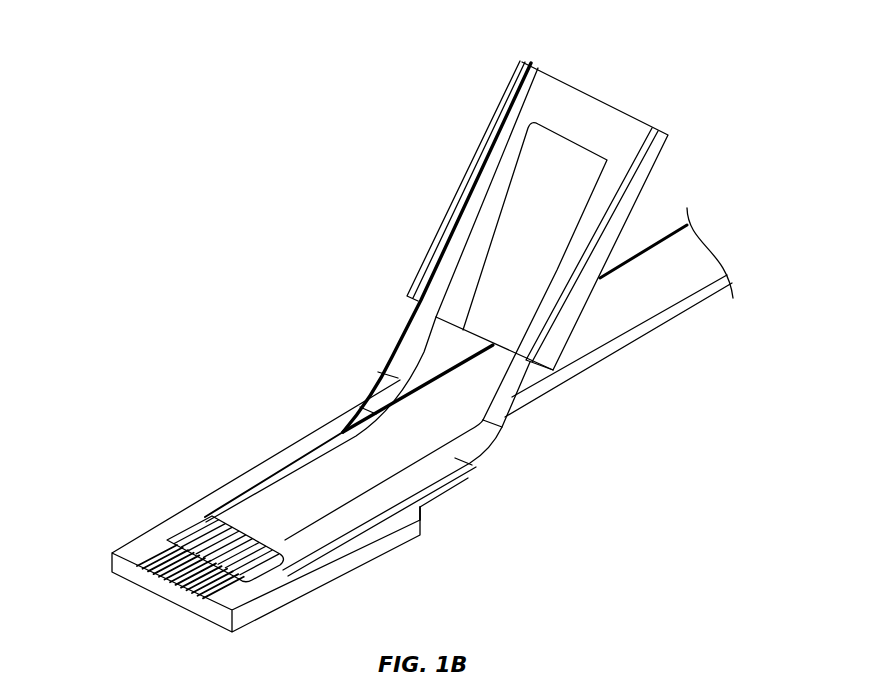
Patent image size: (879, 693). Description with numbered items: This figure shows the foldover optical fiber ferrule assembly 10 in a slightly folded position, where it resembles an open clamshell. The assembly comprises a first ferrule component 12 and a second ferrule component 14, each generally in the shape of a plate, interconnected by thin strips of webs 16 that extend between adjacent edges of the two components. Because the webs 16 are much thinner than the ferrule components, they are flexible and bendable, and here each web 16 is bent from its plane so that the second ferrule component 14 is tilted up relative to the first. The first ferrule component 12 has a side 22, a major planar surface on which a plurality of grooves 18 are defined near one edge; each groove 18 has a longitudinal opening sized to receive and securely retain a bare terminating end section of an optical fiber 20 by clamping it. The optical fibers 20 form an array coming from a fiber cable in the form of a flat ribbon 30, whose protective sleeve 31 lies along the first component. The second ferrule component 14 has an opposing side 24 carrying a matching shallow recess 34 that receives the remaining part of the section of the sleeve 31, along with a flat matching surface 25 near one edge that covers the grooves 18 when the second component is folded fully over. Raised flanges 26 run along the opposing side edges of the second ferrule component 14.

The foldover optical fiber ferrule assembly 10 is at (582, 504).
The first ferrule component 12 is at (330, 568).
The second ferrule component 14 is at (632, 192).
The webs 16 is at (378, 388).
The groove 18 is at (182, 594).
The optical fiber 20 is at (140, 566).
The side of the first ferrule component 22 is at (218, 496).
The side of the second ferrule component 24 is at (437, 271).
The matching/mating surface 25 is at (585, 110).
The raised flanges 26 is at (522, 61).
The flat ribbon 30 is at (617, 352).
The sleeve 31 is at (292, 490).
The matching shallow recess 34 is at (525, 238).